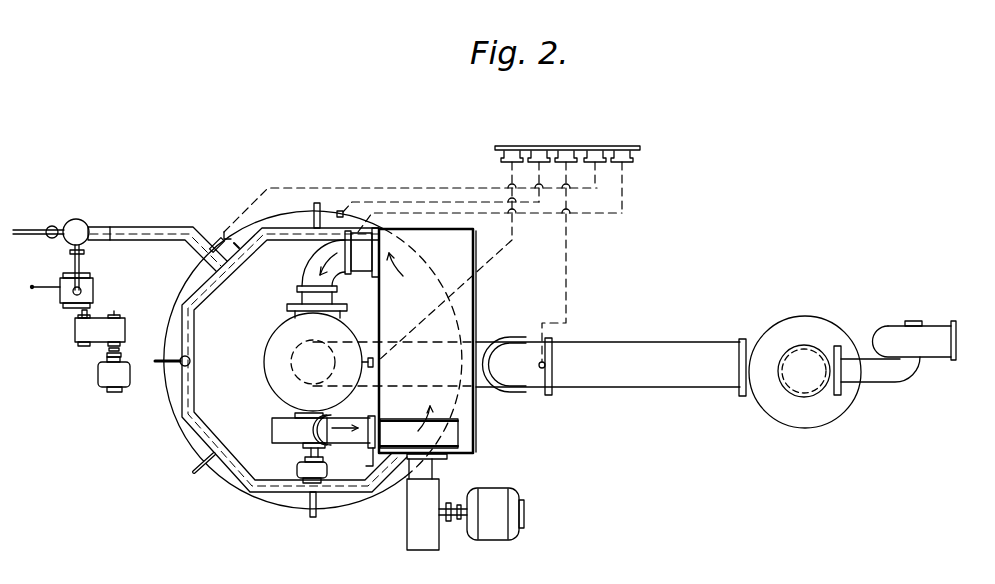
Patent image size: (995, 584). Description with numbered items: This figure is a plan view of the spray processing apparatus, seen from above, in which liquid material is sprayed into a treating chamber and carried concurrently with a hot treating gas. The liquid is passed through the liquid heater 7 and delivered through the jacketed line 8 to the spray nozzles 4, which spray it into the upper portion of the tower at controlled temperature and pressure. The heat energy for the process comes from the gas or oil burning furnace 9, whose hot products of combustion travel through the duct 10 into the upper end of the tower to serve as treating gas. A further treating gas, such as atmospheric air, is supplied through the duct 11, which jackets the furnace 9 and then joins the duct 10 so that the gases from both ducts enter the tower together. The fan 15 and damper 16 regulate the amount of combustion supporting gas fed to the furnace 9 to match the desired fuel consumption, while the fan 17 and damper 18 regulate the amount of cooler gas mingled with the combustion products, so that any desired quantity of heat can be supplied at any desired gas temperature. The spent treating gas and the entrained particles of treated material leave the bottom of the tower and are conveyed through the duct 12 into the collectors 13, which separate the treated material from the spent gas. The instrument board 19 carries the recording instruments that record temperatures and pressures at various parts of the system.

The spray nozzles 4 is at (201, 477).
The liquid heater 7 is at (88, 243).
The jacketed line 8 is at (168, 226).
The furnace 9 is at (470, 300).
The duct 10 is at (306, 268).
The duct 11 is at (345, 443).
The duct 12 is at (625, 381).
The collectors 13 is at (819, 317).
The fan 15 is at (415, 525).
The damper 16 is at (462, 455).
The fan 17 is at (278, 428).
The damper 18 is at (372, 419).
The instrument board 19 is at (641, 152).